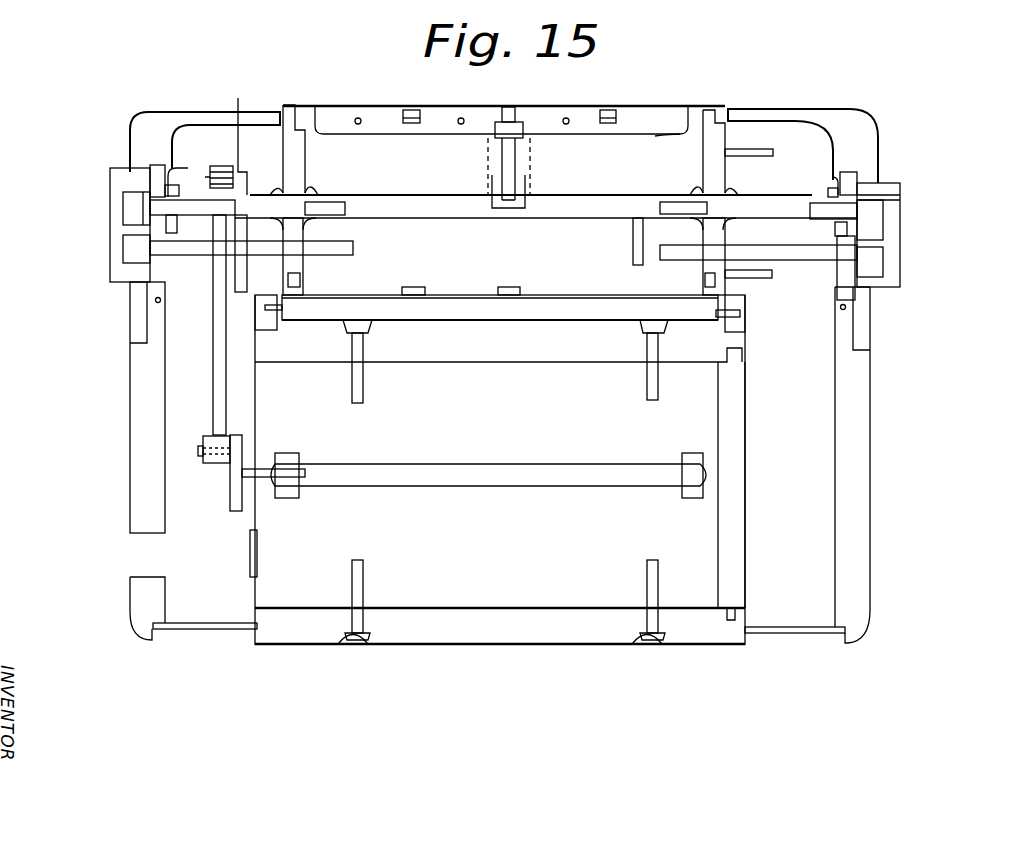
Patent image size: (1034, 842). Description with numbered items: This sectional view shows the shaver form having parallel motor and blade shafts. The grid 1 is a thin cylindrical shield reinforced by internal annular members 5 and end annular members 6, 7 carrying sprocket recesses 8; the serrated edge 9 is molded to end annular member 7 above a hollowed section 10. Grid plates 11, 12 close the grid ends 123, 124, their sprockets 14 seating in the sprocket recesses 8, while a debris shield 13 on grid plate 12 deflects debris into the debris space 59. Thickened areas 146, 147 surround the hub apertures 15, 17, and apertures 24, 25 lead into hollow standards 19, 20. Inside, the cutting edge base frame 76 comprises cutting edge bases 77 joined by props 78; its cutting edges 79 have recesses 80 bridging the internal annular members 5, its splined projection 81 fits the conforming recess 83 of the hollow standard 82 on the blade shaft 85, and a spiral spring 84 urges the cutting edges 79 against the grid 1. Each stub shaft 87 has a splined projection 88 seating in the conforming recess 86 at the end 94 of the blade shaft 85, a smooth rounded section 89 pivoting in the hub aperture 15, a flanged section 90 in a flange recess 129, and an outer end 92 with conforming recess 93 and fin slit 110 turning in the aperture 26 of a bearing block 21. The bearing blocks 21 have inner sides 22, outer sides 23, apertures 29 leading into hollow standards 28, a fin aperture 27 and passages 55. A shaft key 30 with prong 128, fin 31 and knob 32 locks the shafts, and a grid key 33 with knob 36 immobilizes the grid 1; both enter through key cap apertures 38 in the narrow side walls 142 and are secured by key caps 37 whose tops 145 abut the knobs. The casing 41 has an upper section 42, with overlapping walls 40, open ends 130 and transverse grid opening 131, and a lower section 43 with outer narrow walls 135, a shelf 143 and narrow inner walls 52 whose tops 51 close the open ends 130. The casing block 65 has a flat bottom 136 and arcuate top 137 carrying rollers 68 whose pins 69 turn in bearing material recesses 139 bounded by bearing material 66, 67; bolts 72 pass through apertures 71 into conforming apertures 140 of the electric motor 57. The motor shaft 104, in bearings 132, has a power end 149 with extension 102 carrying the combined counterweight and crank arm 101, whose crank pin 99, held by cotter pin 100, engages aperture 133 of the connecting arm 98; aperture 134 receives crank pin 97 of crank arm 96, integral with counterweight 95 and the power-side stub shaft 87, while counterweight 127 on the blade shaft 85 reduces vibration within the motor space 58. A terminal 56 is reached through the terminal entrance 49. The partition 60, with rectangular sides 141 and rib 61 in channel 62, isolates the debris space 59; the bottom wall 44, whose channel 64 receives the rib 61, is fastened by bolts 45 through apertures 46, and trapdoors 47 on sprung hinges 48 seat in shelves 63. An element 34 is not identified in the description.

The press frame 1 is at (446, 106).
The lug 5 is at (510, 288).
The stop 6 is at (301, 282).
The frame side wall 7 is at (708, 118).
The frame side wall 8 is at (296, 106).
The corner 9 is at (728, 118).
The plate 10 is at (741, 142).
The wall 11 is at (306, 153).
The wall 12 is at (718, 157).
The guide plate 13 is at (762, 150).
The wall 14 is at (283, 120).
The fillet 15 is at (318, 193).
The boss 17 is at (722, 207).
The shaft end 19 is at (354, 254).
The bracket 20 is at (670, 258).
The post 21 is at (157, 164).
The pin 22 is at (172, 315).
The post 23 is at (131, 300).
The column 24 is at (286, 260).
The shaft 25 is at (733, 253).
The link 26 is at (150, 198).
The pin 27 is at (178, 237).
The arm 28 is at (212, 295).
The arm 29 is at (212, 268).
The slide block 30 is at (123, 208).
The slide 31 is at (150, 221).
The housing 32 is at (138, 200).
The block 33 is at (135, 244).
The shaft 34 is at (354, 248).
The wall 36 is at (122, 252).
The wall 37 is at (112, 280).
The wall 38 is at (130, 282).
The hook 40 is at (176, 168).
The side assembly 41 is at (120, 405).
The housing 42 is at (878, 318).
The side plate 43 is at (872, 436).
The base plate 44 is at (492, 633).
The post 45 is at (364, 572).
The foot 46 is at (352, 646).
The flange 47 is at (195, 623).
The bar 48 is at (250, 632).
The support 49 is at (148, 553).
The block 51 is at (141, 346).
The side column 52 is at (165, 510).
The hole 55 is at (162, 302).
The stub 56 is at (250, 560).
The chamber 57 is at (498, 528).
The space 58 is at (180, 358).
The space 59 is at (778, 475).
The inner wall 60 is at (725, 458).
The notch 61 is at (745, 361).
The step 62 is at (727, 350).
The hook 63 is at (160, 618).
The corner 64 is at (736, 646).
The cross bar 65 is at (498, 316).
The block 66 is at (745, 328).
The bracket 67 is at (260, 333).
The lug 68 is at (430, 296).
The pin 69 is at (741, 314).
The rail 71 is at (519, 304).
The bolt 72 is at (364, 346).
The carriage 76 is at (478, 143).
The panel 77 is at (656, 136).
The hole 78 is at (566, 124).
The top bar 79 is at (372, 106).
The lug 80 is at (412, 124).
The plunger 81 is at (501, 165).
The housing 82 is at (496, 186).
The cup 83 is at (512, 210).
The guide 84 is at (531, 180).
The plate 85 is at (572, 213).
The stub shaft 86 is at (346, 208).
The shaft 87 is at (247, 213).
The boss 88 is at (284, 225).
The slot 89 is at (294, 166).
The pin 90 is at (835, 197).
The housing 92 is at (148, 195).
The bar 93 is at (196, 207).
The fillet 94 is at (310, 192).
The column 95 is at (242, 293).
The wall 96 is at (283, 194).
The pad 97 is at (179, 191).
The arm 98 is at (213, 392).
The bolt 99 is at (198, 453).
The nut 100 is at (208, 436).
The stub 101 is at (252, 533).
The rod 102 is at (306, 477).
The shaft 104 is at (575, 463).
The coil 110 is at (210, 178).
The cover 123 is at (282, 103).
The plate 124 is at (730, 294).
The bracket 127 is at (633, 250).
The pin 128 is at (178, 226).
The pin 129 is at (840, 240).
The block 130 is at (152, 319).
The wall 131 is at (748, 125).
The collar 132 is at (286, 453).
The plate 133 is at (230, 470).
The shield 134 is at (238, 115).
The side plate 135 is at (130, 505).
The panel 136 is at (560, 364).
The panel 137 is at (495, 325).
The block 139 is at (725, 320).
The bolt 140 is at (649, 368).
The wall 141 is at (718, 423).
The tube 142 is at (142, 113).
The block 143 is at (135, 347).
The wall 145 is at (112, 274).
The boss 146 is at (300, 228).
The fillet 147 is at (735, 193).
The collar 149 is at (268, 495).